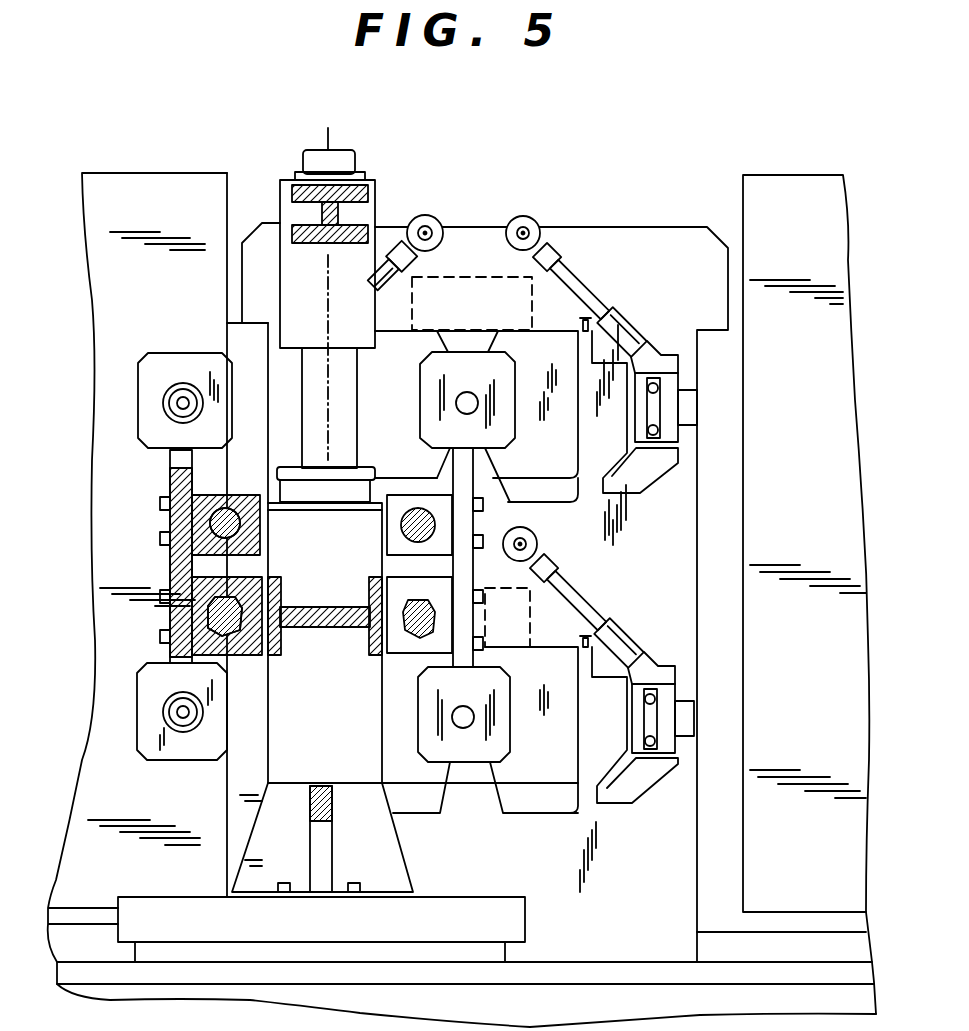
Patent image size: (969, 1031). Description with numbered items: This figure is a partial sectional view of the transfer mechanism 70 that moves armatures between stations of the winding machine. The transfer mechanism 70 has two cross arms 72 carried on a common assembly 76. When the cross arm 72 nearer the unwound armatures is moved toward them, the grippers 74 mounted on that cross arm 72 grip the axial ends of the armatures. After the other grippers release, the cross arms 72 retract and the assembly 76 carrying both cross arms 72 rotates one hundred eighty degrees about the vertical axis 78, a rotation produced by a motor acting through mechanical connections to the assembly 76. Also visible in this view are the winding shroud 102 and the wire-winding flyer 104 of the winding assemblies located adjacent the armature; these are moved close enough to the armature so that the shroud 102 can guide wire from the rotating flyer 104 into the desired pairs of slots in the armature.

The transfer mechanism 70 is at (74, 692).
The cross arm 72 is at (178, 482).
The gripper 74 is at (172, 397).
The assembly 76 is at (272, 765).
The vertical axis 78 is at (327, 413).
The winding shroud 102 is at (490, 347).
The wire-winding flyer 104 is at (397, 243).